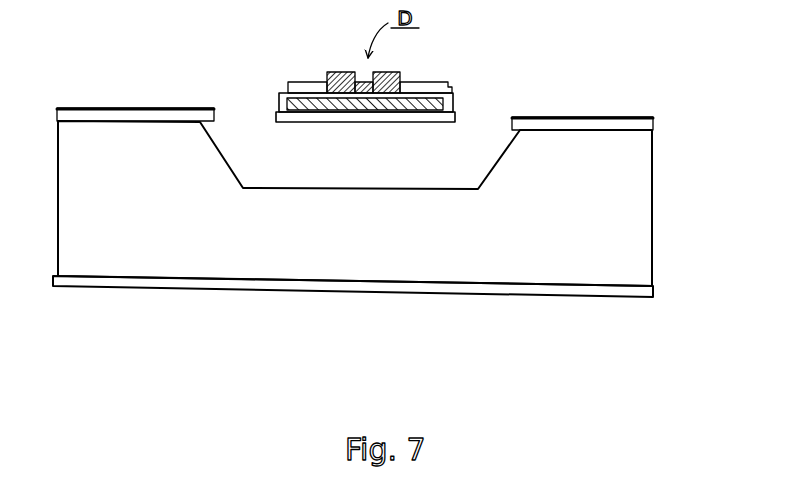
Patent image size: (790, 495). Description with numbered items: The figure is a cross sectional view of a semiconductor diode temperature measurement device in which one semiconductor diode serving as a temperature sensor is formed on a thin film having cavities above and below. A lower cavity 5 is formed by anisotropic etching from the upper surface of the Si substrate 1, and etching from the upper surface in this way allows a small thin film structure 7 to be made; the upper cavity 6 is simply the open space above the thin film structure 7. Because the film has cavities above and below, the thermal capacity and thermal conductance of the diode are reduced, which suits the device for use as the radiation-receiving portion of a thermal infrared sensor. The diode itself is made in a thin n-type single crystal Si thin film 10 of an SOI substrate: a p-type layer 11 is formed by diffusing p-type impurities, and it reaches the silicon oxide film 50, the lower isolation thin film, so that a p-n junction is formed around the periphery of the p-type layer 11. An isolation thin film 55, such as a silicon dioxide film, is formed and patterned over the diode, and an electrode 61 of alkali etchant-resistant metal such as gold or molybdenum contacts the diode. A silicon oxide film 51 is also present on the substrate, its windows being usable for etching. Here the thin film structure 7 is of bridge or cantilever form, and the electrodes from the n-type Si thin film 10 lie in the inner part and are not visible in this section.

The Si substrate 1 is at (617, 204).
The silicon oxide film 50 is at (123, 113).
The silicon oxide film 51 is at (278, 287).
The lower cavity 5 is at (354, 85).
The thin film structure 7 is at (277, 105).
The n-type single crystal Si thin film 10 is at (287, 85).
The isolation thin film 55 is at (428, 88).
The upper cavity 6 is at (339, 51).
The electrode 61 is at (348, 75).
The p-type layer 11 is at (407, 82).